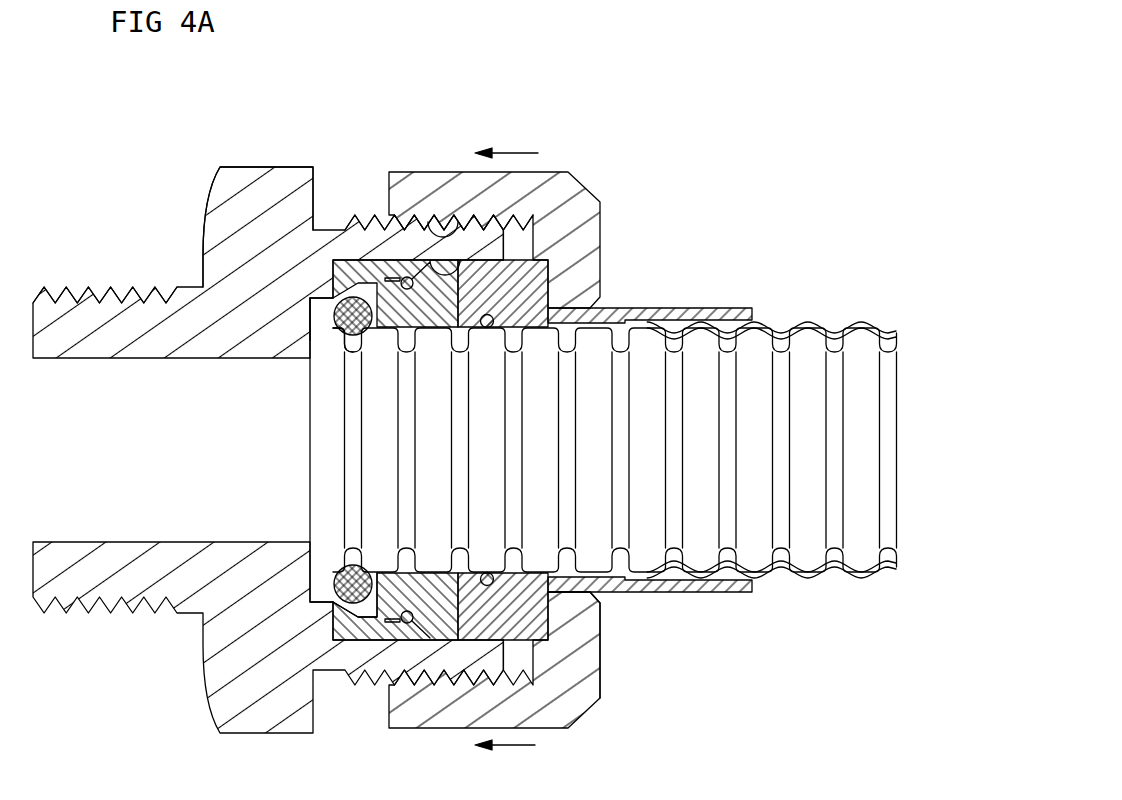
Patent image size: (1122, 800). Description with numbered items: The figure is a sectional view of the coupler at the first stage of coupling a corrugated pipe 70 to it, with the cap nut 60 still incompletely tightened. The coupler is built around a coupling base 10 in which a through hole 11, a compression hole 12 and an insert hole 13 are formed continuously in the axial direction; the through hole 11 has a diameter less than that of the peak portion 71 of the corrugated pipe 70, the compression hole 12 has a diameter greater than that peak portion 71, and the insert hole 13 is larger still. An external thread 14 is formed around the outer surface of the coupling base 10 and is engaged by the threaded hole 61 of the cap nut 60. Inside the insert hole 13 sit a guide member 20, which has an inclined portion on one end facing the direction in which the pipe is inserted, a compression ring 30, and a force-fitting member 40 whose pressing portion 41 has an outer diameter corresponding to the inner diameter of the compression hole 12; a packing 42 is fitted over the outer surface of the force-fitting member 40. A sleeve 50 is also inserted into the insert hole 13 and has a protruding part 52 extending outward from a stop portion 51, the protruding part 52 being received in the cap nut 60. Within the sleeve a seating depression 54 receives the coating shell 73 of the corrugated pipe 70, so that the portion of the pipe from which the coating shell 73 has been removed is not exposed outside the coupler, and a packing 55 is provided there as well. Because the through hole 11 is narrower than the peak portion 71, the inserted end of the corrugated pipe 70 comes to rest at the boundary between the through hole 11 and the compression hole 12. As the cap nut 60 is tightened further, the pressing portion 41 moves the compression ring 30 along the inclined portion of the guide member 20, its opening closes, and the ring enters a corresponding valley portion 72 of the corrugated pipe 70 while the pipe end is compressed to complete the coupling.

The coupling base 10 is at (255, 166).
The through hole 11 is at (78, 383).
The compression hole 12 is at (287, 313).
The insert hole 13 is at (464, 258).
The external thread 14 is at (375, 228).
The guide member 20 is at (353, 642).
The compression ring 30 is at (336, 582).
The force-fitting member 40 is at (500, 641).
The pressing portion 41 is at (340, 567).
The packing 42 is at (433, 618).
The sleeve 50 is at (538, 625).
The stop portion 51 is at (550, 613).
The protruding part 52 is at (656, 594).
The seating depression 54 is at (680, 317).
The packing 55 is at (495, 318).
The cap nut 60 is at (556, 171).
The threaded hole 61 is at (428, 222).
The corrugated pipe 70 is at (330, 433).
The peak portion 71 is at (310, 320).
The valley portion 72 is at (343, 338).
The coating shell 73 is at (795, 318).